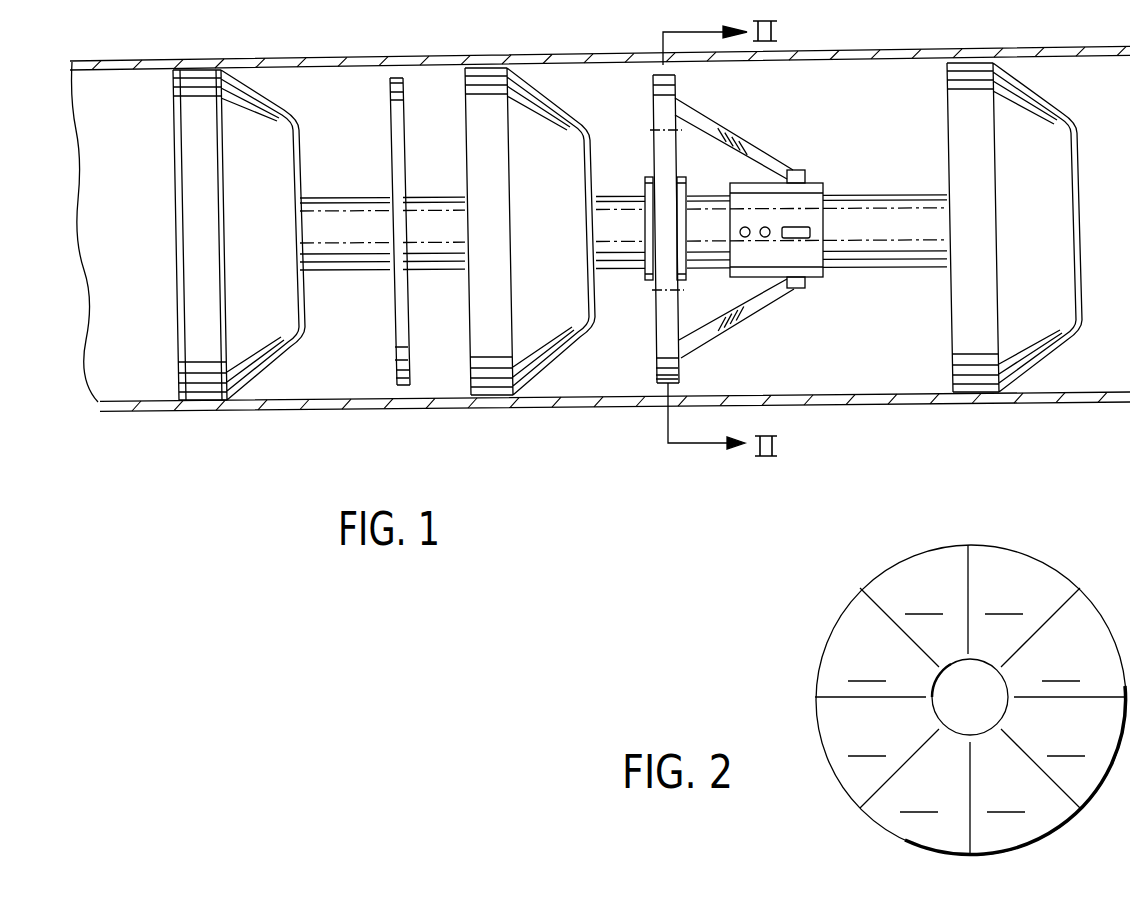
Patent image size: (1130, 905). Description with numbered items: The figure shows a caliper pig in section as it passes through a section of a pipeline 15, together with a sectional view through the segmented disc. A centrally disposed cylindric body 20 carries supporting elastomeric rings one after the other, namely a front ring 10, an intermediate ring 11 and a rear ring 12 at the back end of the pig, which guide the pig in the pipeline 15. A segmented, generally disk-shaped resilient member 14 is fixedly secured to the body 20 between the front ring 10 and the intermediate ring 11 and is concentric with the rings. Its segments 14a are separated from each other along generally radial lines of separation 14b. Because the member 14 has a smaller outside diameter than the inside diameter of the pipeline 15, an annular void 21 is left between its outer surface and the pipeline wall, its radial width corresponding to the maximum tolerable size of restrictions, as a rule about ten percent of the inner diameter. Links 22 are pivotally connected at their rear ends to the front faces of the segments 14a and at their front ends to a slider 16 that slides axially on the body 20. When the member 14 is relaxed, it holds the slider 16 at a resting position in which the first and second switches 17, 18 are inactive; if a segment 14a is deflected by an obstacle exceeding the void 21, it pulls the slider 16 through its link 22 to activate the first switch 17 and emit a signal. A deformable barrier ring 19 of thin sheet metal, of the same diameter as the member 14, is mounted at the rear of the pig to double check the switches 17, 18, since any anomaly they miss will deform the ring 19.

In FIG. 1, the front ring 10 is at (1043, 194).
In FIG. 1, the intermediate ring 11 is at (558, 197).
In FIG. 1, the rear ring 12 is at (270, 199).
In FIG. 1, the resilient member 14 is at (660, 147).
In FIG. 2, the resilient member 14 is at (933, 688).
In FIG. 2, the segment 14a is at (970, 701).
In FIG. 2, the radial line of separation 14b is at (1047, 618).
In FIG. 1, the pipeline 15 is at (887, 53).
In FIG. 1, the slider 16 is at (813, 183).
In FIG. 1, the first switch 17 is at (752, 221).
In FIG. 1, the second switch 18 is at (767, 226).
In FIG. 1, the deformable barrier ring 19 is at (400, 157).
In FIG. 1, the body 20 is at (367, 199).
In FIG. 1, the void 21 is at (652, 392).
In FIG. 1, the link 22 is at (722, 120).